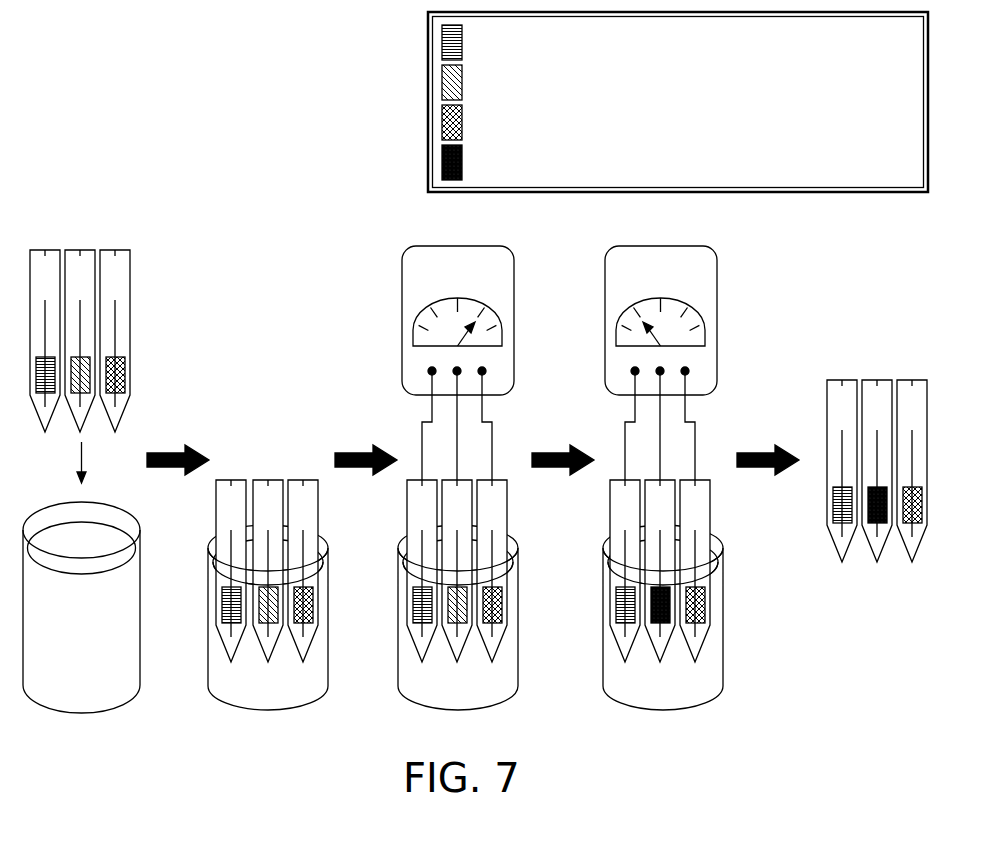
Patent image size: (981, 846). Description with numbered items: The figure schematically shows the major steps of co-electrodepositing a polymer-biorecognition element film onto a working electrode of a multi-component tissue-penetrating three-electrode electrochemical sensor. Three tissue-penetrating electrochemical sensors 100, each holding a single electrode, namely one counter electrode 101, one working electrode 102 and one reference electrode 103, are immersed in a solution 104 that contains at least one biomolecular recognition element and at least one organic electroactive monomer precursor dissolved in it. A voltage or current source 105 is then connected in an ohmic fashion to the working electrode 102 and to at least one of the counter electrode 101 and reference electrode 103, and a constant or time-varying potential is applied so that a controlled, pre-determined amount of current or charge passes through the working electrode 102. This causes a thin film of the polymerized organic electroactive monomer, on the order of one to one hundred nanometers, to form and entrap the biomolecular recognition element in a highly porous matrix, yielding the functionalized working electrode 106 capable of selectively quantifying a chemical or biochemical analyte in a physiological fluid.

The tissue-penetrating electrochemical sensor 100 is at (478, 456).
The counter electrode 101 is at (677, 42).
The working electrode 102 is at (677, 82).
The reference electrode 103 is at (677, 122).
The solution 104 is at (373, 607).
The voltage or current source 105 is at (559, 363).
The functionalized working electrode 106 is at (677, 162).